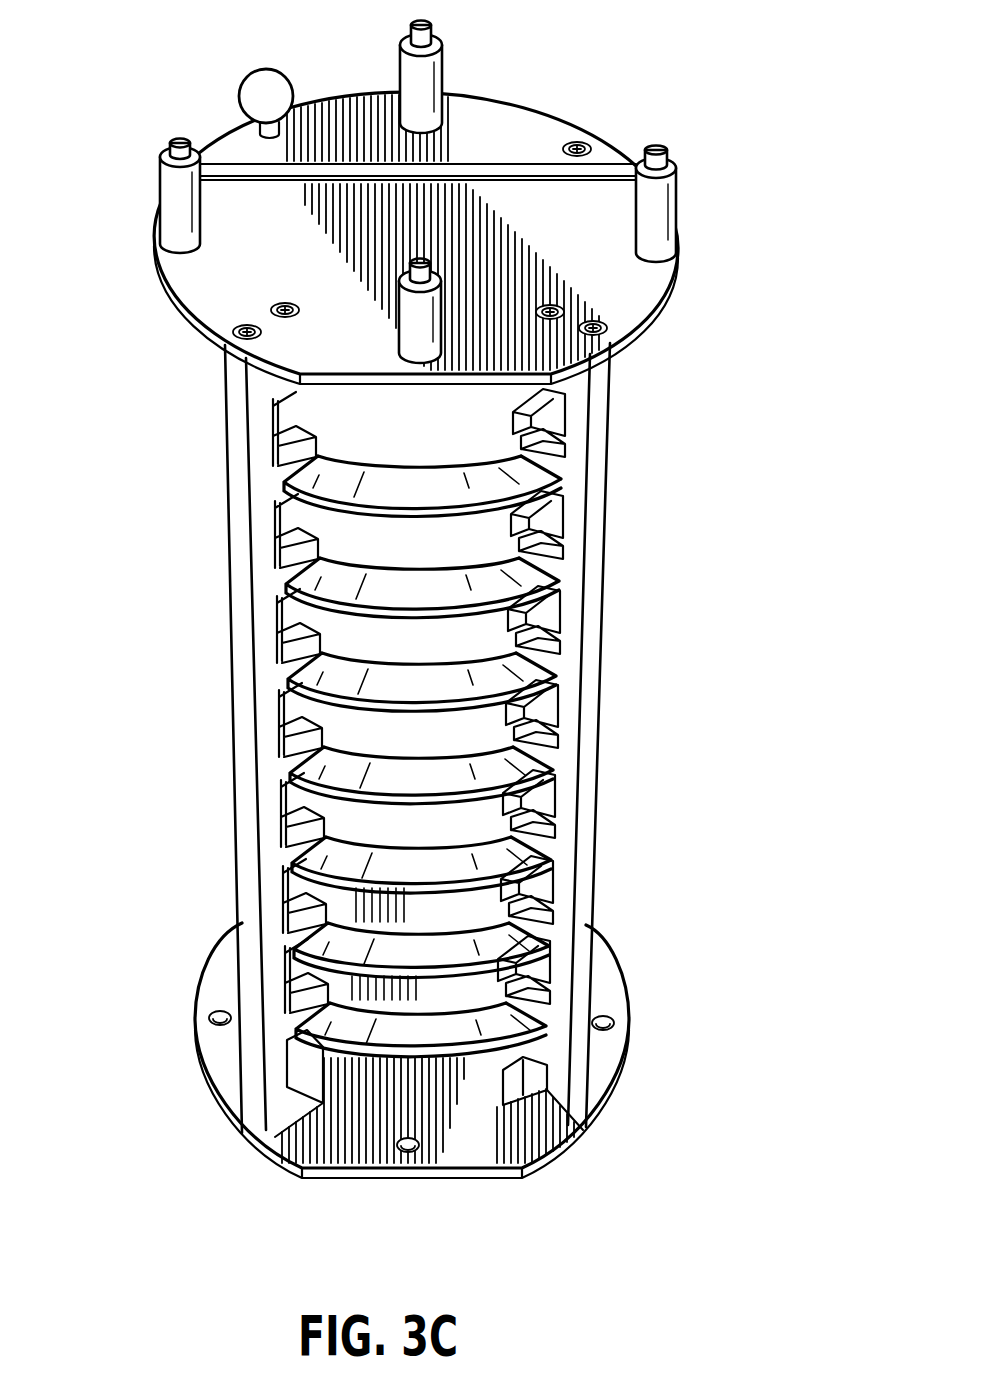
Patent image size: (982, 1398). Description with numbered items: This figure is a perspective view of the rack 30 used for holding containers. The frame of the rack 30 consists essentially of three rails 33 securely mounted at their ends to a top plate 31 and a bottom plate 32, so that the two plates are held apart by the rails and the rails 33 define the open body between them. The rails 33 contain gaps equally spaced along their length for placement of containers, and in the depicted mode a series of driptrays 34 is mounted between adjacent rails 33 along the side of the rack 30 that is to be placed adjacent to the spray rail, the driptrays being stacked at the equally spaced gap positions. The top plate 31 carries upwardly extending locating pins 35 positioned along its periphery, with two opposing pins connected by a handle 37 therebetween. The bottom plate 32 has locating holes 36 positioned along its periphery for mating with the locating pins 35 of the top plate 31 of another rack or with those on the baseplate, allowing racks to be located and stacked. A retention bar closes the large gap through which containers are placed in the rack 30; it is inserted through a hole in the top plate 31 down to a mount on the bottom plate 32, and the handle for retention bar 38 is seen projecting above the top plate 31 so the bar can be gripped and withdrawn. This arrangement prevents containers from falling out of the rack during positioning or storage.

The rack 30 is at (643, 494).
The top plate 31 is at (645, 345).
The bottom plate 32 is at (605, 1092).
The rails 33 is at (598, 720).
The driptray 34 is at (500, 847).
The locating pins 35 is at (161, 182).
The locating holes 36 is at (208, 1019).
The handle 37 is at (533, 166).
The handle for retention bar 38 is at (293, 85).